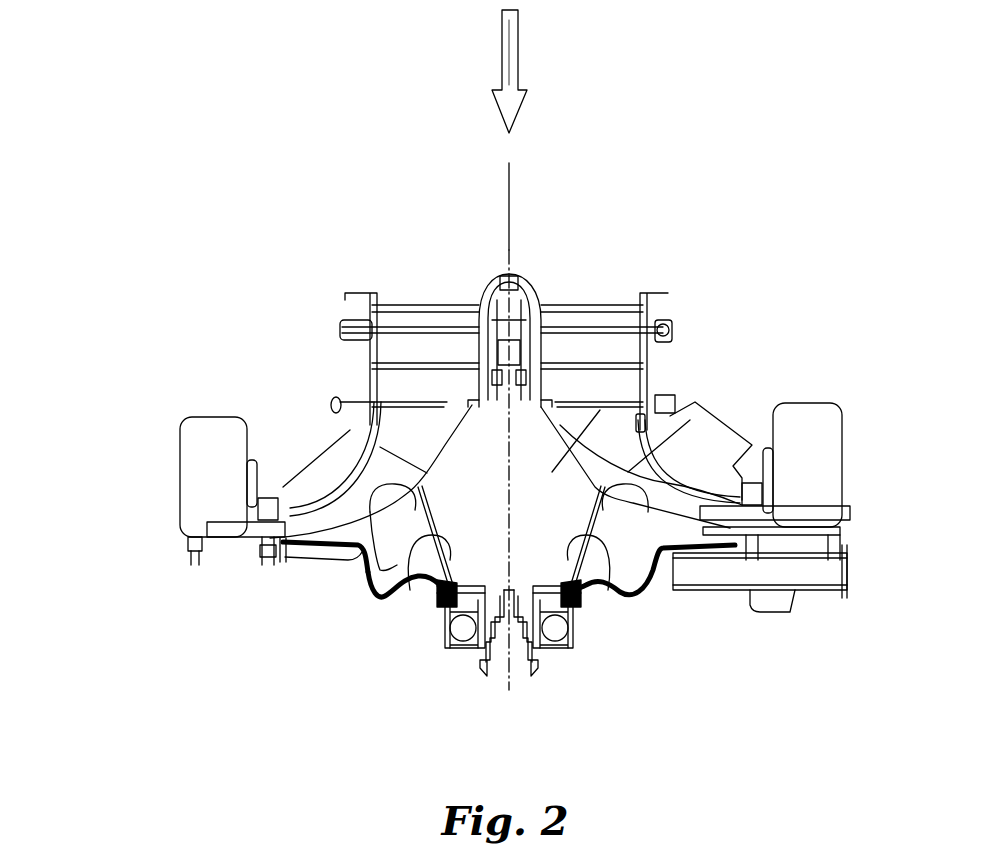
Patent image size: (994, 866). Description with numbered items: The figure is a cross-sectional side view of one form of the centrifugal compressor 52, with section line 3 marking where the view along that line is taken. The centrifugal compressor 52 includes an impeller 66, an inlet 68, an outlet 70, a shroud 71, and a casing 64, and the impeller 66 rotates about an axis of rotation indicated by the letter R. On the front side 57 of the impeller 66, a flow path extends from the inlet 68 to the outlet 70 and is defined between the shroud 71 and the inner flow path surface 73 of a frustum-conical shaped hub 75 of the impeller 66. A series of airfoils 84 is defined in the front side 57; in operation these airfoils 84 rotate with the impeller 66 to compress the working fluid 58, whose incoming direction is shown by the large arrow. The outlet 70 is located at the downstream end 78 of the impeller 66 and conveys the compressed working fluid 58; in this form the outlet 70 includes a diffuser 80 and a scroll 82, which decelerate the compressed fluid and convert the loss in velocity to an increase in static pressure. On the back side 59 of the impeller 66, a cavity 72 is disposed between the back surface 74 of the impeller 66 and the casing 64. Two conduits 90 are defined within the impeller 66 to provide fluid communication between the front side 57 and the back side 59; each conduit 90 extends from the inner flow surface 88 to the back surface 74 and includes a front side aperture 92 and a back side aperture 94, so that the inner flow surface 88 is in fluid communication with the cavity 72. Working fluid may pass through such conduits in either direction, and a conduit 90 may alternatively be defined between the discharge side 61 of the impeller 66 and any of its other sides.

The centrifugal compressor 52 is at (793, 204).
The front side 57 is at (391, 214).
The working fluid 58 is at (520, 42).
The back side 59 is at (567, 686).
The discharge side 61 is at (745, 545).
The casing 64 is at (660, 600).
The impeller 66 is at (613, 427).
The inlet 68 is at (448, 281).
The outlet 70 is at (155, 433).
The shroud 71 is at (343, 431).
The cavity 72 is at (648, 600).
The inner flow path surface 73 is at (637, 503).
The back surface 74 is at (622, 570).
The hub 75 is at (453, 427).
The downstream end 78 is at (135, 547).
The diffuser 80 is at (775, 525).
The scroll 82 is at (815, 485).
The airfoils 84 is at (658, 380).
The inner flow surface 88 is at (552, 472).
The conduit 90 is at (410, 570).
The front side aperture 92 is at (374, 560).
The back side aperture 94 is at (437, 625).
The section line FIG. 3 is at (123, 490).